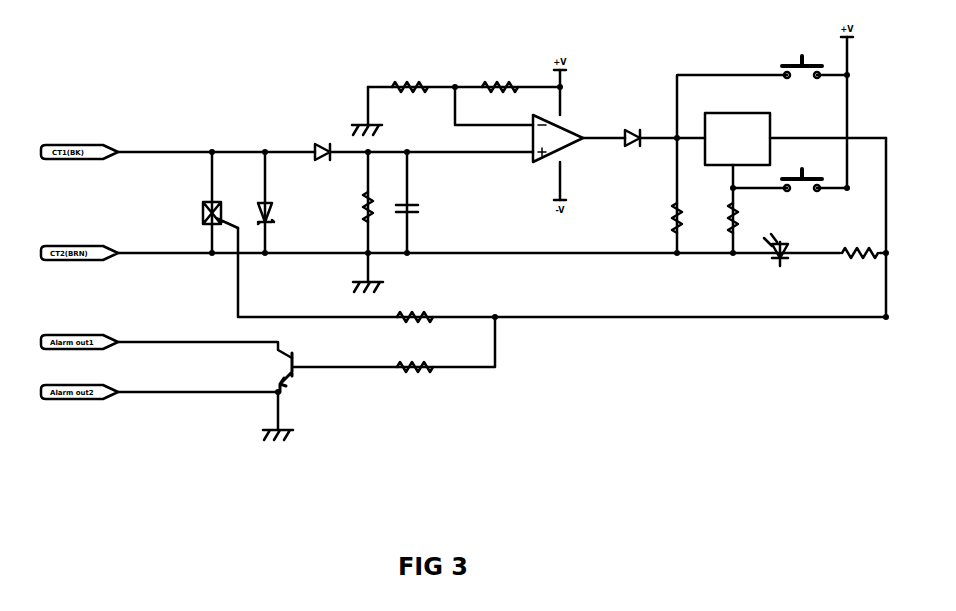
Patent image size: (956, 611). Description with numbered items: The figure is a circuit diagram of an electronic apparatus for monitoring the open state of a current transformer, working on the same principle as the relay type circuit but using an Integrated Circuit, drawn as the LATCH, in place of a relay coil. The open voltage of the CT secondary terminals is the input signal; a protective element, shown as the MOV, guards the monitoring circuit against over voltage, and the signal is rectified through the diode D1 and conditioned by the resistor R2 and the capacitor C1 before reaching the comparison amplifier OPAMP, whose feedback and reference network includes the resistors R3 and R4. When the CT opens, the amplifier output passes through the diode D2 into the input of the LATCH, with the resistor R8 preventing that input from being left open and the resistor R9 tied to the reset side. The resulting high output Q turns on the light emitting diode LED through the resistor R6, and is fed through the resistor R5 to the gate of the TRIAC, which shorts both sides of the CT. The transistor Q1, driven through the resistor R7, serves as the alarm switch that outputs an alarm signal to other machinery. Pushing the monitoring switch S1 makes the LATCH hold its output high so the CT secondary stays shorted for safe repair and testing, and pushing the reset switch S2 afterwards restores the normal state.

The element TRIAC is at (207, 215).
The metal oxide varistor MOV is at (259, 211).
The diode D1 is at (322, 147).
The diode D2 is at (632, 145).
The resistor R2 is at (374, 207).
The resistor R3 is at (500, 82).
The resistor R4 is at (410, 82).
The resistor R5 is at (415, 312).
The resistor R6 is at (858, 248).
The resistor R7 is at (415, 362).
The resistor R8 is at (683, 218).
The resistor R9 is at (739, 217).
The capacitor C1 is at (413, 202).
The comparison amplifier OPAMP is at (562, 138).
The Integrated Circuit LATCH is at (737, 133).
The monitoring switch S1 is at (802, 67).
The reset switch S2 is at (802, 180).
The light emitting diode LED is at (773, 248).
The transistor Q1 is at (294, 372).